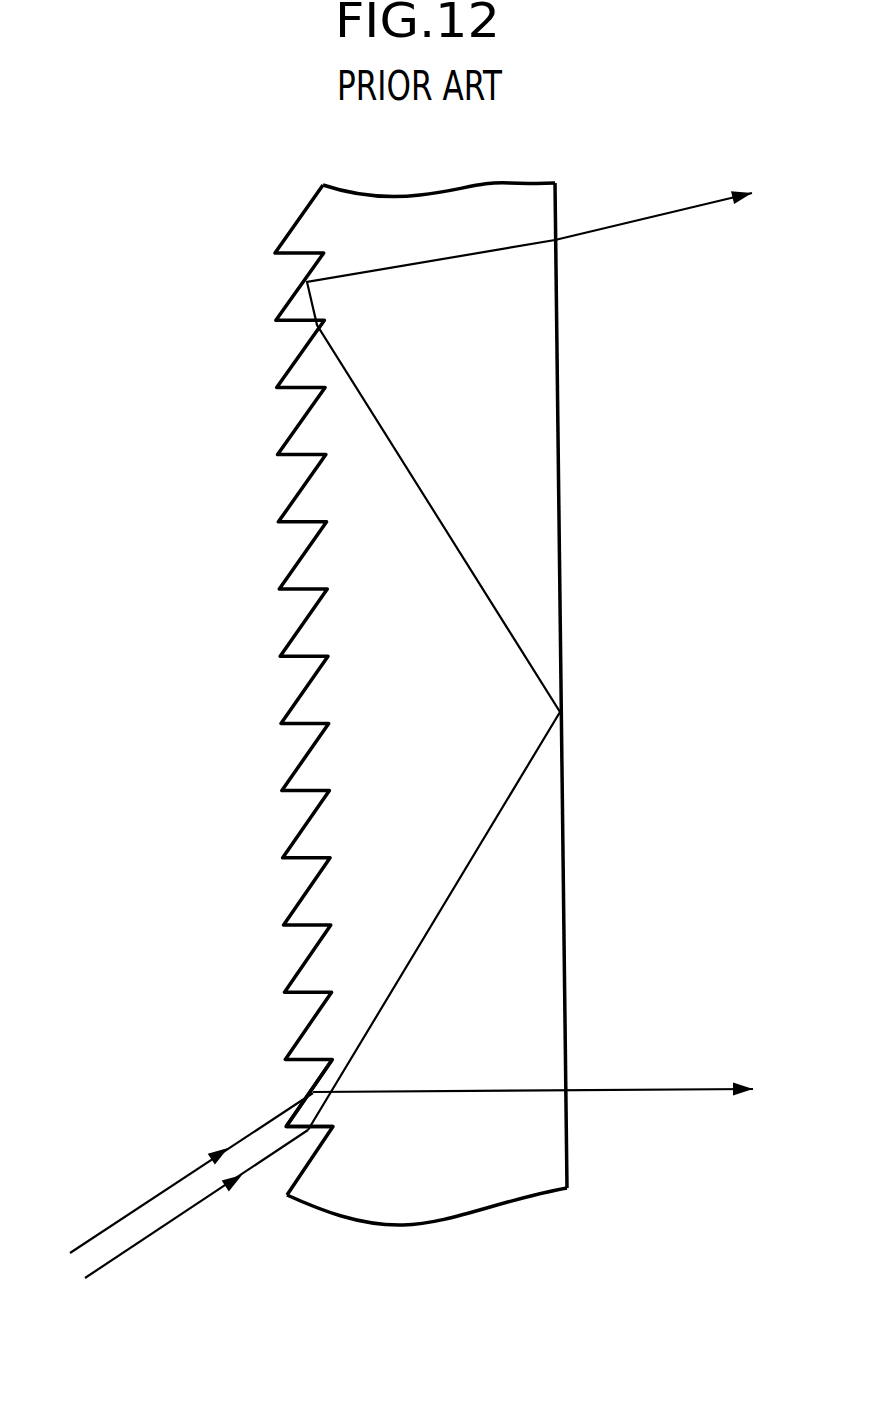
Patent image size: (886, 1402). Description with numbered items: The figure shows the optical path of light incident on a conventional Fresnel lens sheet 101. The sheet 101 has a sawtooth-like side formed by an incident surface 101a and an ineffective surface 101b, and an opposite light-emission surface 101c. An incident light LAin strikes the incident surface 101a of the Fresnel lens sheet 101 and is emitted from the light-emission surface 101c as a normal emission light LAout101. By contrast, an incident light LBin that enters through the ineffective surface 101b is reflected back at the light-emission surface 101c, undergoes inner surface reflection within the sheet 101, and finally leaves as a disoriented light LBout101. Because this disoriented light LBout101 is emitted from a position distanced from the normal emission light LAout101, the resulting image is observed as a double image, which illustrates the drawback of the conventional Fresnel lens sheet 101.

The Fresnel lens sheet 101 is at (542, 470).
The incident surface 101a is at (320, 1087).
The ineffective surface 101b is at (313, 1130).
The light-emission surface 101c is at (564, 888).
The incident light LAin is at (123, 1215).
The incident light LBin is at (132, 1247).
The normal emission light LAout101 is at (662, 1088).
The disoriented light LBout101 is at (657, 215).